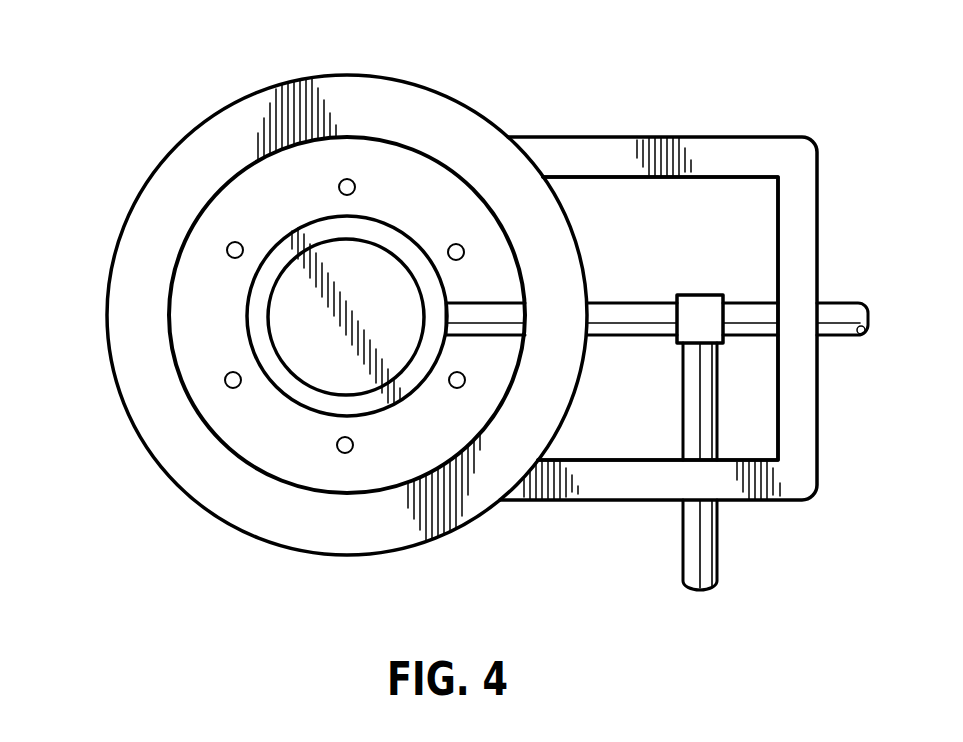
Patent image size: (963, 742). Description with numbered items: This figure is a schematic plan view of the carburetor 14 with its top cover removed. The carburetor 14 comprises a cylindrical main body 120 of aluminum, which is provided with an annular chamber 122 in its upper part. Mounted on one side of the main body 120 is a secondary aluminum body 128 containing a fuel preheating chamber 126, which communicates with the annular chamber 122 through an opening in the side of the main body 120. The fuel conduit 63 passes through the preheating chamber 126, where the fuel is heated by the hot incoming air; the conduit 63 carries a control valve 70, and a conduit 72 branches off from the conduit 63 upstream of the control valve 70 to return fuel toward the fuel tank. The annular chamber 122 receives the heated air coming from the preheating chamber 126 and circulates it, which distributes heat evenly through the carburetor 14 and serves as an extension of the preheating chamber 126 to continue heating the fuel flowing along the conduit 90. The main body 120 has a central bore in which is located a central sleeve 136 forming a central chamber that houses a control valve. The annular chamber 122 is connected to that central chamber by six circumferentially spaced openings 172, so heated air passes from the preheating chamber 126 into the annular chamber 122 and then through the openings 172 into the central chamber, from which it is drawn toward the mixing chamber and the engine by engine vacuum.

The carburetor 14 is at (173, 517).
The conduit 63 is at (838, 313).
The control valve 70 is at (700, 305).
The conduit 72 is at (695, 546).
The conduit 90 is at (631, 318).
The cylindrical main body 120 is at (168, 175).
The annular chamber 122 is at (265, 187).
The fuel preheating chamber 126 is at (637, 423).
The secondary aluminum body 128 is at (592, 157).
The central sleeve 136 is at (285, 307).
The circumferentially spaced openings 172 is at (349, 180).